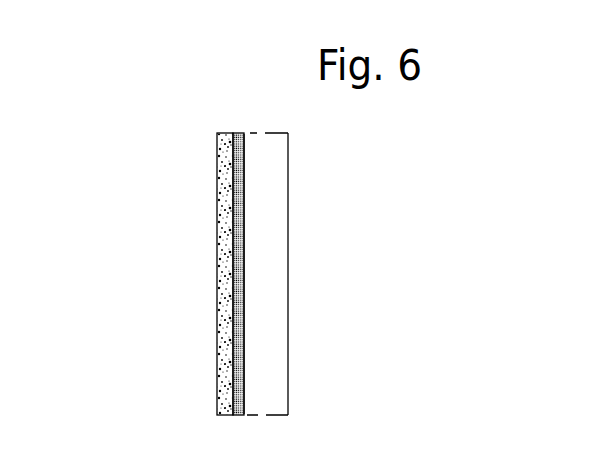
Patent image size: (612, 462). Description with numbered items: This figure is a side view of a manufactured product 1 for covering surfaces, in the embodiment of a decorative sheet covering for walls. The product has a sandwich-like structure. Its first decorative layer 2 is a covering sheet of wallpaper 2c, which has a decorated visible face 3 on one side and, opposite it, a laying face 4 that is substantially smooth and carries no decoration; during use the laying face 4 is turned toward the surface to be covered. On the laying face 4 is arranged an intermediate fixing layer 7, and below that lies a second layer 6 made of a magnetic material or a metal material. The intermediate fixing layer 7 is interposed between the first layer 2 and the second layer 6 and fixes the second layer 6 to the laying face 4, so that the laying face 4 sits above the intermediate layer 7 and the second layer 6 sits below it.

The manufactured product 1 is at (140, 101).
The first decorative layer 2 is at (313, 418).
The sheet of wallpaper 2c is at (262, 245).
The visible face 3 is at (288, 171).
The laying face 4 is at (243, 320).
The second layer 6 is at (226, 286).
The intermediate fixing layer 7 is at (243, 403).